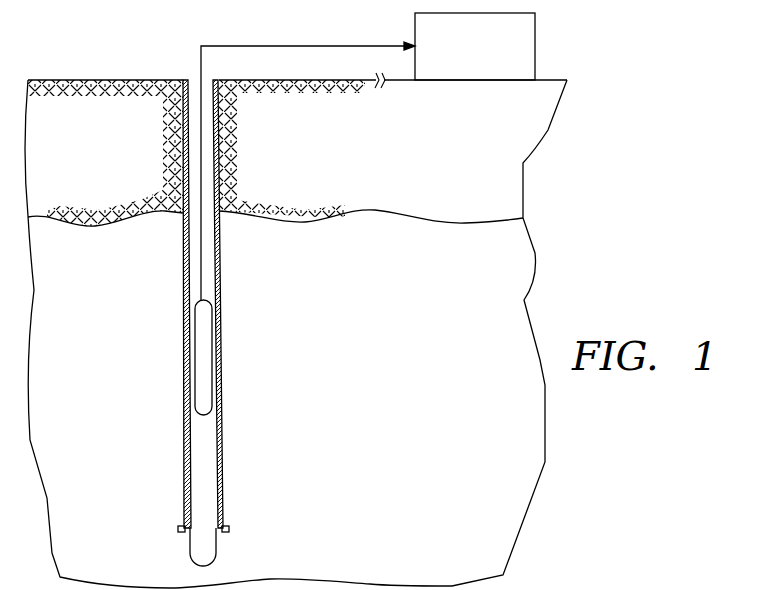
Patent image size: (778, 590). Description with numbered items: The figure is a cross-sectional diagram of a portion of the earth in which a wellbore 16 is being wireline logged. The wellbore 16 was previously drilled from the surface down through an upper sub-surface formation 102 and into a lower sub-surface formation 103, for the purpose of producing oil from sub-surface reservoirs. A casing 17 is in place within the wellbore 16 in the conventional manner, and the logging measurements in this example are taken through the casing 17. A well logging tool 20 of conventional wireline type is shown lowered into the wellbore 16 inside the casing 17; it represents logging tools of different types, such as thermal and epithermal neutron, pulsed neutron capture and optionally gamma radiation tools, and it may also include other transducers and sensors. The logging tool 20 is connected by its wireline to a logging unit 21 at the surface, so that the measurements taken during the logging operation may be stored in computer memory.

The wellbore 16 is at (218, 543).
The casing 17 is at (222, 450).
The well logging tool 20 is at (203, 388).
The logging unit 21 is at (535, 47).
The sub-surface formation 102 is at (288, 176).
The sub-surface formation 103 is at (327, 374).